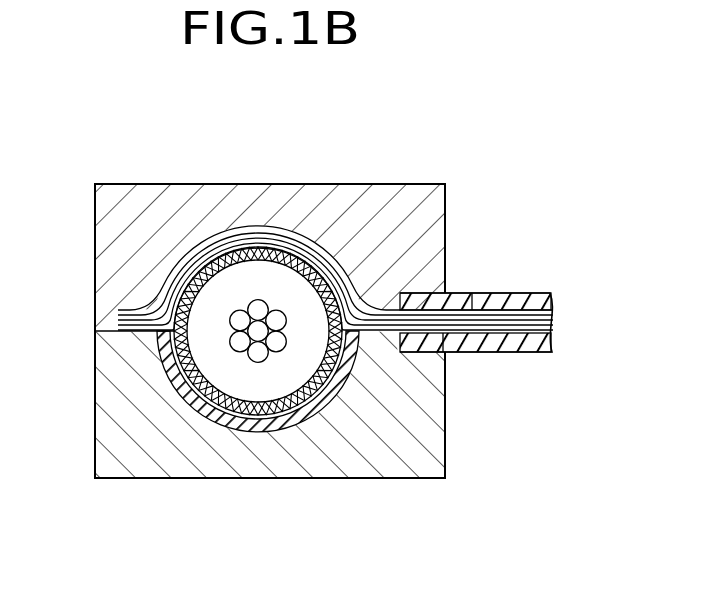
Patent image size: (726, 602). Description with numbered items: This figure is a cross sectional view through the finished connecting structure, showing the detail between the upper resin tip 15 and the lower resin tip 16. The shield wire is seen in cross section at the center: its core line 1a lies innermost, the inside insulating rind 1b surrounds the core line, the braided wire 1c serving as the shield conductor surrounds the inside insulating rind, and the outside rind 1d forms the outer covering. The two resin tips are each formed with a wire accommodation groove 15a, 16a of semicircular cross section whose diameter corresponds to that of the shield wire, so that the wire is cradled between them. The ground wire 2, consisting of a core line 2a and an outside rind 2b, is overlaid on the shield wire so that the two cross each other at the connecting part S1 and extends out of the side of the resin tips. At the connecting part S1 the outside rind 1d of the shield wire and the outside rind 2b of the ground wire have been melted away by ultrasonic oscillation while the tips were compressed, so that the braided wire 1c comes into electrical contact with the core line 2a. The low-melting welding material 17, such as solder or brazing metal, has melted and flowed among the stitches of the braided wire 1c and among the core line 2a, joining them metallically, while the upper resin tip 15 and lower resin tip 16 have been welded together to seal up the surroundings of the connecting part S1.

The upper resin tip 15 is at (150, 224).
The wire accommodation groove 15a is at (348, 288).
The lower resin tip 16 is at (410, 462).
The wire accommodation groove 16a is at (320, 407).
The low-melting welding material 17 is at (262, 228).
The connecting part S1 is at (314, 240).
The ground wire 2 is at (534, 293).
The core line 2a is at (473, 293).
The outside rind 2b is at (489, 354).
The core line 1a is at (257, 358).
The inside insulating rind 1b is at (240, 408).
The braided wire 1c is at (291, 427).
The outside rind 1d is at (213, 373).